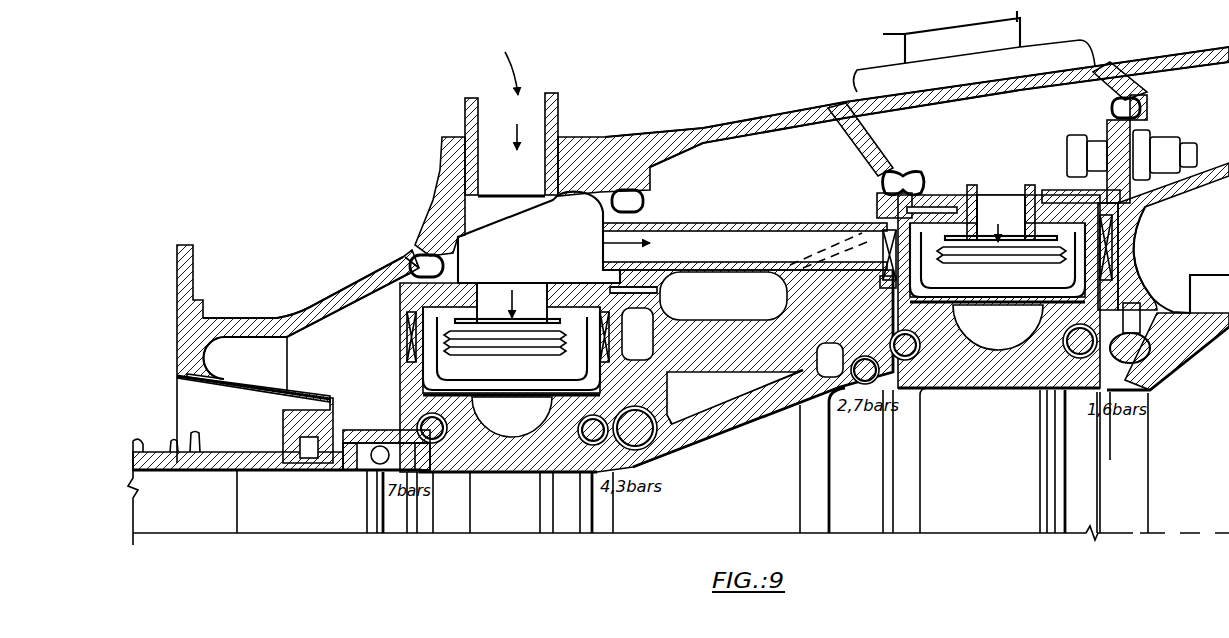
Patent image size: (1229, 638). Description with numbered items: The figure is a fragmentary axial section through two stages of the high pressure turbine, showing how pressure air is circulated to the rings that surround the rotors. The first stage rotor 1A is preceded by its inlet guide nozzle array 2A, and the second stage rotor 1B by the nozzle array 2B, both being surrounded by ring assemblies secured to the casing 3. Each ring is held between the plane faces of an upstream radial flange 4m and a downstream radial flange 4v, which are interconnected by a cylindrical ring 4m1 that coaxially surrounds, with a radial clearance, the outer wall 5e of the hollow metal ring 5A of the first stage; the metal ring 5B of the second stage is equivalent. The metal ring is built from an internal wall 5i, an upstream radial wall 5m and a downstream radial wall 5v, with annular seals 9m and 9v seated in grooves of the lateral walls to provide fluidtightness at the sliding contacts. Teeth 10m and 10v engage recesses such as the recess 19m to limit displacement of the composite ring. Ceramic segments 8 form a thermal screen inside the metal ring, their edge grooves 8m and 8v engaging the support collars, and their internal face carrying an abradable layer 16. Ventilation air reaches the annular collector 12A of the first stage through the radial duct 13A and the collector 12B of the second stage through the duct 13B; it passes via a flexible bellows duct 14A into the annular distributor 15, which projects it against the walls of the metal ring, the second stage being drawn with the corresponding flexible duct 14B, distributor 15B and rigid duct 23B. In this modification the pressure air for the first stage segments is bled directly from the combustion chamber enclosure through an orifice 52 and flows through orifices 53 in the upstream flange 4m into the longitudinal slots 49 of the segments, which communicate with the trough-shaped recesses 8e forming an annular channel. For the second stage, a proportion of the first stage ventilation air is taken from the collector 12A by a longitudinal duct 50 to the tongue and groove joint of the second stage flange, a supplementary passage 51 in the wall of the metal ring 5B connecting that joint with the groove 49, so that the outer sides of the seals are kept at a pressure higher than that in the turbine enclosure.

The rotor 1A is at (600, 519).
The rotor 1B is at (1072, 505).
The inlet guide nozzle array 2A is at (388, 523).
The inlet guide nozzle array 2B is at (836, 500).
The casing 3 is at (328, 286).
The upstream radial flange 4m is at (423, 330).
The downstream radial flange 4v is at (630, 354).
The cylindrical ring 4m1 is at (408, 268).
The metal ring 5A is at (640, 246).
The metal ring 5B is at (1056, 208).
The outer wall 5e is at (417, 252).
The upstream radial wall 5m is at (407, 316).
The downstream radial wall 5v is at (655, 294).
The internal wall 5i is at (657, 373).
The ceramic segment 8 is at (554, 473).
The recess 8e is at (552, 398).
The upstream concave groove 8m is at (477, 473).
The downstream concave groove 8v is at (547, 473).
The upstream annular seal 9m is at (441, 473).
The downstream annular seal 9v is at (590, 475).
The upstream tooth 10m is at (885, 247).
The downstream tooth 10v is at (1134, 272).
The annular collector 12A is at (522, 256).
The annular collector 12B is at (979, 147).
The radial duct 13A is at (558, 115).
The radial duct 13B is at (1025, 19).
The flexible duct 14A is at (626, 340).
The second stage seal 14B is at (922, 184).
The annular distributor 15 is at (450, 350).
The second stage sealing gas inlet pipe 15B is at (1001, 212).
The abradable layer 16 is at (523, 473).
The recess 19m is at (882, 283).
The second stage bolted flange 23B is at (1032, 187).
The longitudinal groove 49 is at (673, 397).
The longitudinal duct 50 is at (740, 223).
The supplementary passage 51 is at (803, 312).
The orifice 52 is at (262, 362).
The orifice 53 is at (413, 400).